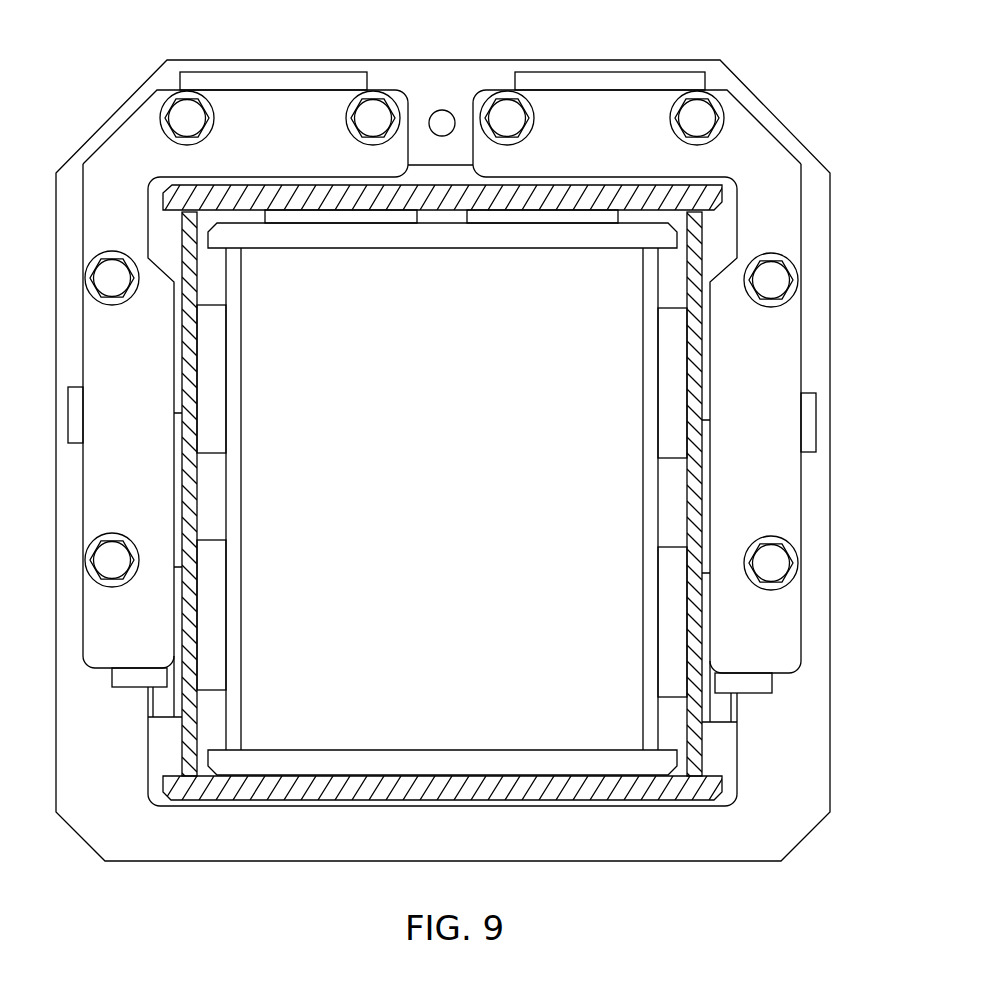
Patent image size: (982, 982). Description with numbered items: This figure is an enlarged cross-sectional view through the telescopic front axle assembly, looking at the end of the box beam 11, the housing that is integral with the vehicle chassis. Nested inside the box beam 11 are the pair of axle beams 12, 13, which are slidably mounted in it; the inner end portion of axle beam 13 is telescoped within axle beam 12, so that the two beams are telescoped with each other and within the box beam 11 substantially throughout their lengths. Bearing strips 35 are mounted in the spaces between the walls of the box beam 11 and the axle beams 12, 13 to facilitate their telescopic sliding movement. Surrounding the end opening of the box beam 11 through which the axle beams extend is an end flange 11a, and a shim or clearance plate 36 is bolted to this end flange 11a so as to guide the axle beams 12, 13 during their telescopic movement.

The box beam 11 is at (150, 230).
The end flange 11a is at (455, 92).
The axle beam 12 is at (190, 367).
The axle beam 13 is at (233, 332).
The bearing strip 35 is at (212, 403).
The shim or clearance plate 36 is at (752, 168).